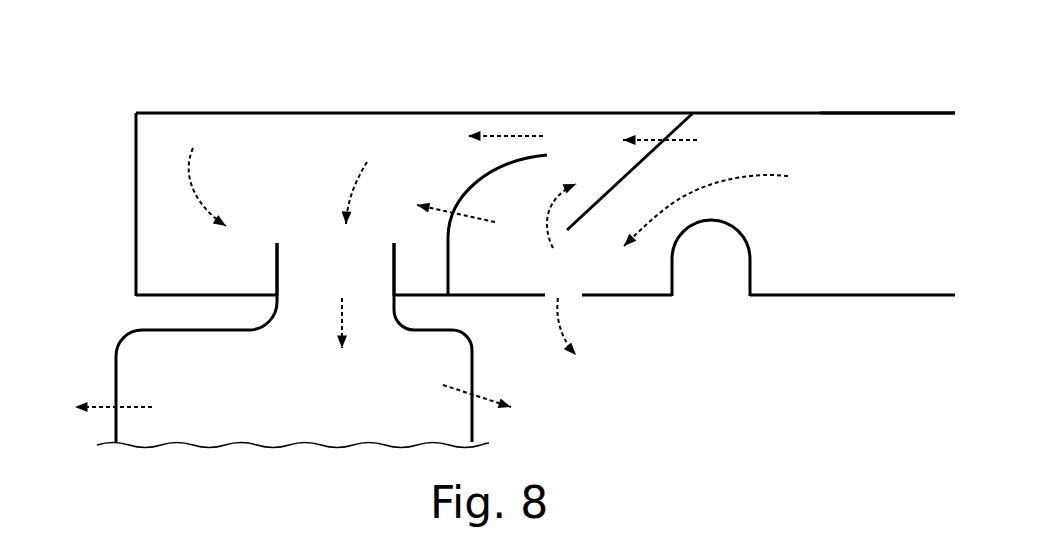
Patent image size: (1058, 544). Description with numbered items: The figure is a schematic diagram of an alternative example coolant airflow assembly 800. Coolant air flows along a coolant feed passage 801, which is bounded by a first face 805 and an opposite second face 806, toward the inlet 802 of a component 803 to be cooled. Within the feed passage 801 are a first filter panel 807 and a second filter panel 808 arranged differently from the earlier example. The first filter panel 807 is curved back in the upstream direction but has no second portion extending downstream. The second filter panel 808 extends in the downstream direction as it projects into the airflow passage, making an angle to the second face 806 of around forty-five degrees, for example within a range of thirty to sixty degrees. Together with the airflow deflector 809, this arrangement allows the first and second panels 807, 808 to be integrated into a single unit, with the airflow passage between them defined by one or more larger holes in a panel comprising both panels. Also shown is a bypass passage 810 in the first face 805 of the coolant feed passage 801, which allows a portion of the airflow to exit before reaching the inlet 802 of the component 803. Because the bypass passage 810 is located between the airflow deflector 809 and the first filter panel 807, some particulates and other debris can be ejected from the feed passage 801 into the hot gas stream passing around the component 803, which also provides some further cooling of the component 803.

The coolant airflow assembly 800 is at (125, 102).
The coolant feed passage 801 is at (790, 110).
The inlet 802 is at (318, 255).
The component to be cooled 803 is at (150, 328).
The first face 805 is at (878, 293).
The second face 806 is at (858, 115).
The first filter panel 807 is at (475, 180).
The second filter panel 808 is at (620, 177).
The airflow deflector 809 is at (752, 240).
The bypass passage 810 is at (560, 296).